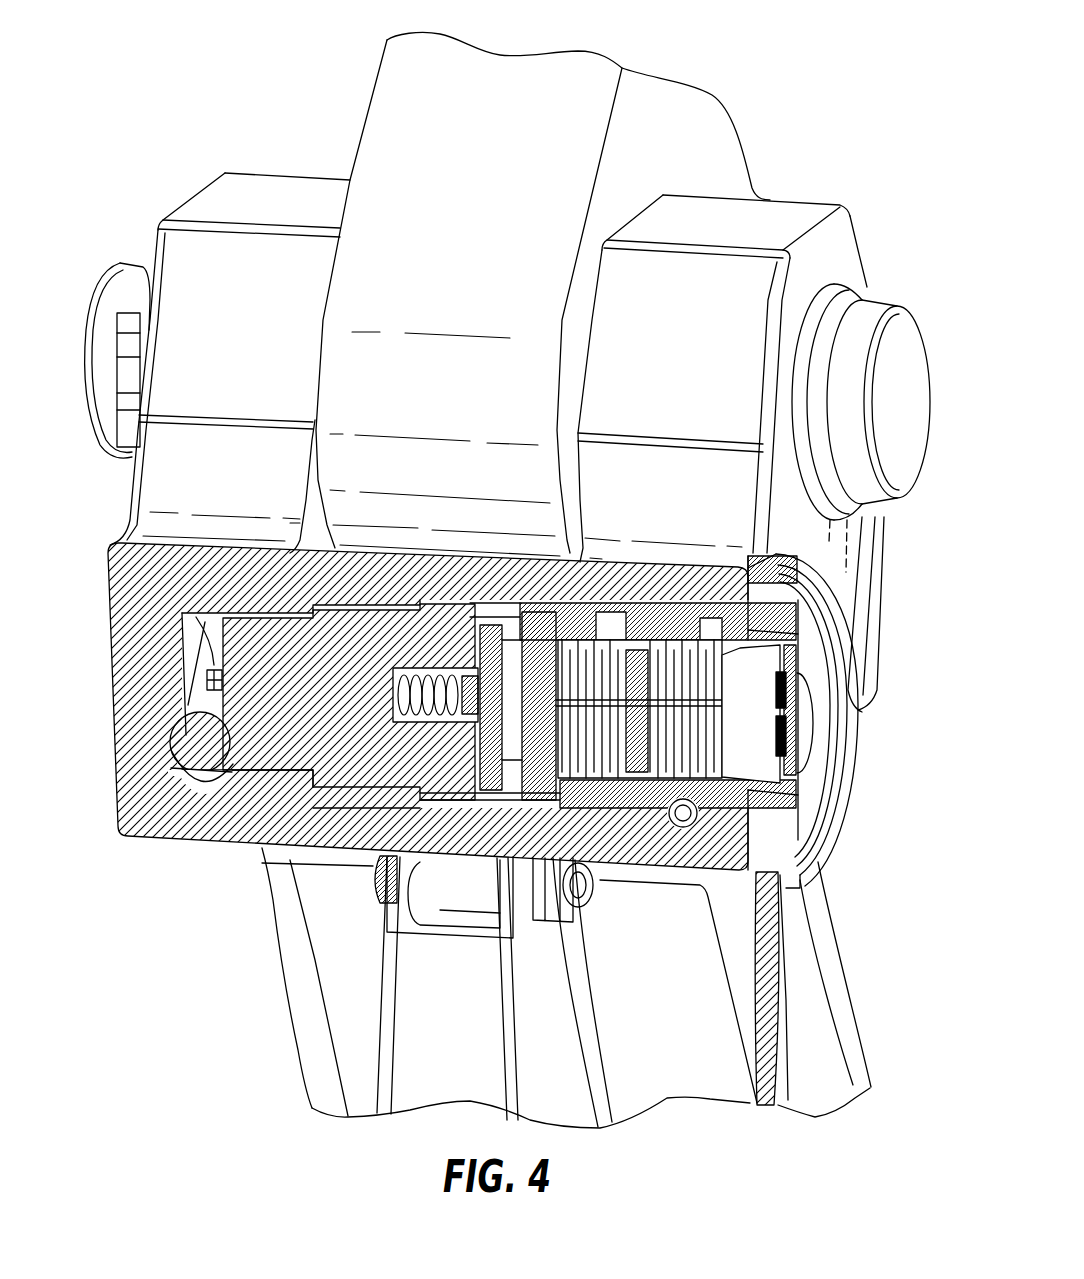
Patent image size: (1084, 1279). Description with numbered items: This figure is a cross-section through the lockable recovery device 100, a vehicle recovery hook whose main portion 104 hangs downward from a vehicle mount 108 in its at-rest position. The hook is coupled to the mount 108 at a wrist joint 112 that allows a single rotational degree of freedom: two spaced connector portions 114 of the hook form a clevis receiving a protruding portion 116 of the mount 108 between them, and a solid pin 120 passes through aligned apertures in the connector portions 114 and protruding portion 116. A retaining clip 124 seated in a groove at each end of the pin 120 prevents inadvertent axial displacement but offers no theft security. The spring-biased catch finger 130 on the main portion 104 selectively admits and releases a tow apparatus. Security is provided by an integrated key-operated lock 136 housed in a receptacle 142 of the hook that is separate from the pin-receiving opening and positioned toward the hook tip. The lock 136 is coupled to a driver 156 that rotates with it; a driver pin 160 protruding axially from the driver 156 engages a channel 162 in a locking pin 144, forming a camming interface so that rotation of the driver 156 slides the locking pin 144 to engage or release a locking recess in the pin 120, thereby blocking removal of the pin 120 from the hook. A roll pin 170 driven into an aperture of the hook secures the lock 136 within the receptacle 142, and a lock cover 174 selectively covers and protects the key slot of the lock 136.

The lockable recovery device 100 is at (150, 148).
The main portion 104 is at (830, 957).
The vehicle mount 108 is at (695, 113).
The wrist joint 112 is at (138, 253).
The connector portions 114 is at (272, 193).
The protruding portion 116 is at (405, 277).
The pin 120 is at (907, 333).
The retaining clip 124 is at (105, 412).
The spring-biased catch finger 130 is at (433, 1007).
The lock 136 is at (866, 753).
The receptacle 142 is at (797, 638).
The locking pin 144 is at (200, 740).
The driver 156 is at (282, 745).
The driver pin 160 is at (203, 677).
The channel 162 is at (217, 663).
The roll pin 170 is at (797, 827).
The lock cover 174 is at (777, 1070).